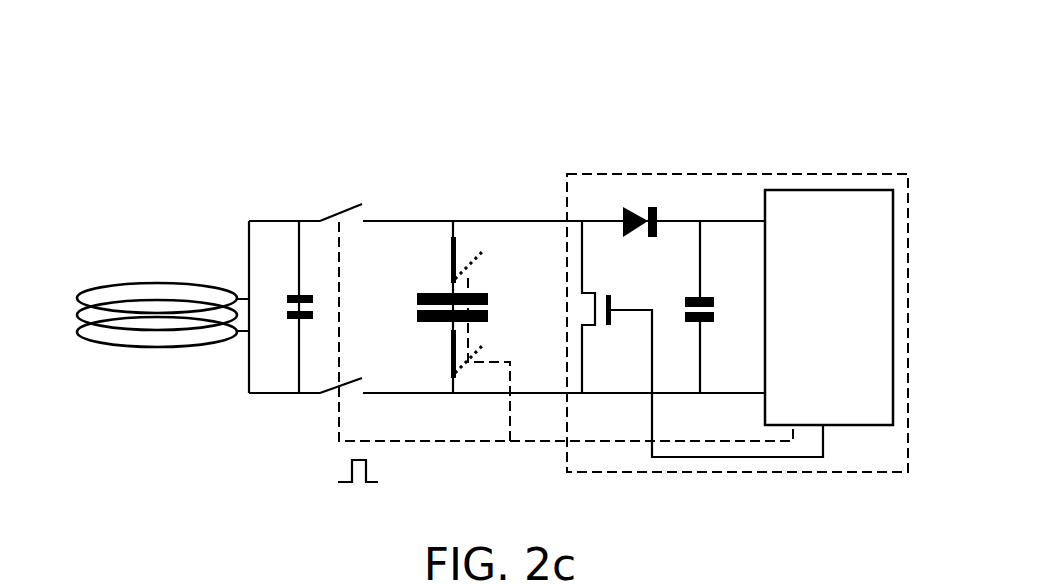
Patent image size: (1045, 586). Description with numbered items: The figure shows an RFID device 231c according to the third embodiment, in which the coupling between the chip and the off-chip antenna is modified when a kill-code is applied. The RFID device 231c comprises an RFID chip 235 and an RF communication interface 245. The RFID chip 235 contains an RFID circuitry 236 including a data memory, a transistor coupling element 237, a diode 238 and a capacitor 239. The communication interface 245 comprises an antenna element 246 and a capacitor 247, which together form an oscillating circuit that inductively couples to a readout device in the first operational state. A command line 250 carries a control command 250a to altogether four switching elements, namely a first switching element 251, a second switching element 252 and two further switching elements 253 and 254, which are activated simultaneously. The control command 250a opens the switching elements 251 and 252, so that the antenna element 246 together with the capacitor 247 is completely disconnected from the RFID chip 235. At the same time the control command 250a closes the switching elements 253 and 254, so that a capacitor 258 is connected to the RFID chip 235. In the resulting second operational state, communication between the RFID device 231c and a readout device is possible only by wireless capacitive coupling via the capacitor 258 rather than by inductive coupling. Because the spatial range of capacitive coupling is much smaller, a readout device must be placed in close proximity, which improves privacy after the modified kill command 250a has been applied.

The RFID device 231c is at (808, 76).
The communication interface 245 is at (75, 160).
The antenna element 246 is at (172, 283).
The capacitor 247 is at (290, 322).
The first switching element 251 is at (346, 211).
The second switching element 252 is at (357, 377).
The capacitor 258 is at (428, 323).
The switching element 253 is at (456, 247).
The switching element 254 is at (456, 343).
The command line 250 is at (340, 254).
The control command 250a is at (346, 472).
The RFID chip 235 is at (750, 173).
The diode 238 is at (632, 207).
The transistor coupling element 237 is at (625, 300).
The capacitor 239 is at (708, 323).
The RFID circuitry 236 is at (829, 307).